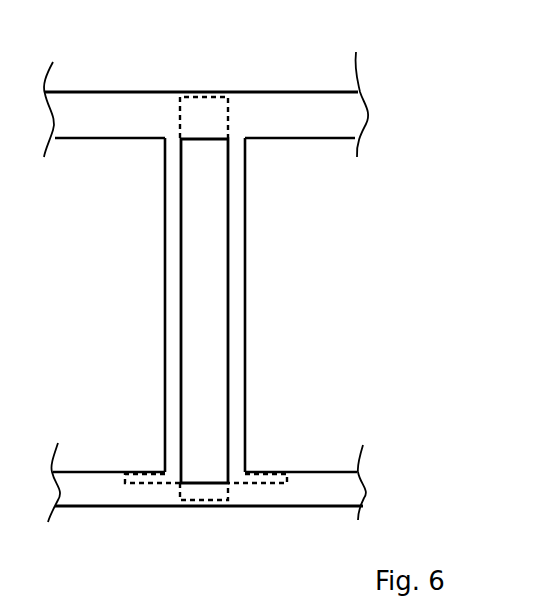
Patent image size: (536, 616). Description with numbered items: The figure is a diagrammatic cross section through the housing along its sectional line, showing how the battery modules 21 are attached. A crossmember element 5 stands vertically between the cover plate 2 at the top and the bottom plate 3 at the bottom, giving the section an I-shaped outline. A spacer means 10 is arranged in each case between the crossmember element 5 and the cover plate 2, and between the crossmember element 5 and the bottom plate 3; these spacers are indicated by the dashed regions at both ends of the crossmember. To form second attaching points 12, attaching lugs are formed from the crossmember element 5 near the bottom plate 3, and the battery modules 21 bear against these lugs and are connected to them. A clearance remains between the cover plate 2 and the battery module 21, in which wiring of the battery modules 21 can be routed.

The cover plate 2 is at (107, 90).
The bottom plate 3 is at (277, 507).
The crossmember element 5 is at (179, 318).
The spacer means 10 is at (198, 108).
The second attaching points 12 is at (292, 482).
The battery modules 21 is at (290, 139).